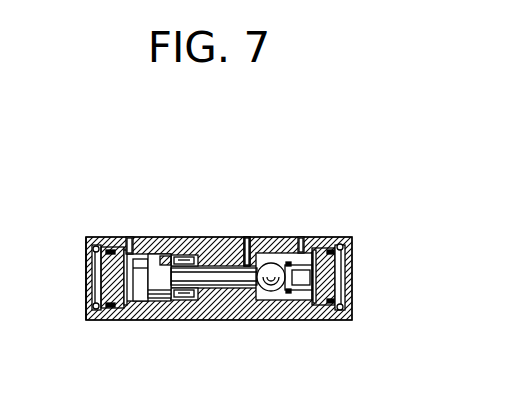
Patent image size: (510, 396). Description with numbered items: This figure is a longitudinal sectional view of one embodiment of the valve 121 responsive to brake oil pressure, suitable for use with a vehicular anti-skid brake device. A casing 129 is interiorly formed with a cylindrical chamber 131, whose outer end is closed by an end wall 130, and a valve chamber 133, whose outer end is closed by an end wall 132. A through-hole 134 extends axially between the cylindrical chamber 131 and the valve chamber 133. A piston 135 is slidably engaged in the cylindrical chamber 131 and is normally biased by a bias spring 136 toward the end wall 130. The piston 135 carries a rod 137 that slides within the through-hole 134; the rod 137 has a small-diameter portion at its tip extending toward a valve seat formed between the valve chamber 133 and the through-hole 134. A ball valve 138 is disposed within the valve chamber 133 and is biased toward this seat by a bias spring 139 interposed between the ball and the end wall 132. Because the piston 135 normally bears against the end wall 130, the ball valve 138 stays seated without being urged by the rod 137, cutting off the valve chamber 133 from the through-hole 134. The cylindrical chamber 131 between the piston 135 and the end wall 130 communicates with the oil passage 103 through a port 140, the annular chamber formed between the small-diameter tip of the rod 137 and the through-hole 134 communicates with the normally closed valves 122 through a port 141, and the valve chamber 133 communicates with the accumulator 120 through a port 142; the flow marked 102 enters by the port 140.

The inlet flow 102 is at (129, 237).
The oil passage 103 is at (131, 197).
The accumulator 120 is at (303, 237).
The valve responsive to brake oil pressure 121 is at (85, 234).
The normally closed valve 122 is at (242, 237).
The casing 129 is at (188, 318).
The end wall 130 is at (108, 307).
The cylindrical chamber 131 is at (138, 306).
The end wall 132 is at (332, 242).
The valve chamber 133 is at (281, 294).
The through-hole 134 is at (253, 245).
The piston 135 is at (148, 258).
The bias spring 136 is at (178, 252).
The rod 137 is at (240, 264).
The ball valve 138 is at (262, 290).
The bias spring 139 is at (304, 292).
The port 140 is at (112, 241).
The port 141 is at (236, 238).
The port 142 is at (290, 236).